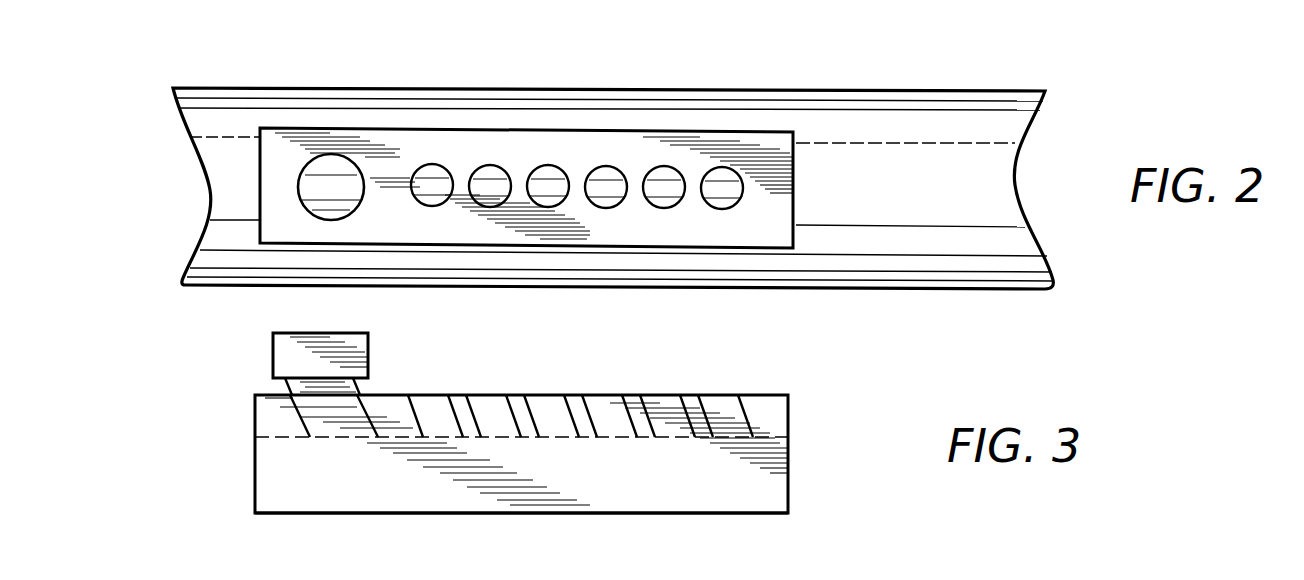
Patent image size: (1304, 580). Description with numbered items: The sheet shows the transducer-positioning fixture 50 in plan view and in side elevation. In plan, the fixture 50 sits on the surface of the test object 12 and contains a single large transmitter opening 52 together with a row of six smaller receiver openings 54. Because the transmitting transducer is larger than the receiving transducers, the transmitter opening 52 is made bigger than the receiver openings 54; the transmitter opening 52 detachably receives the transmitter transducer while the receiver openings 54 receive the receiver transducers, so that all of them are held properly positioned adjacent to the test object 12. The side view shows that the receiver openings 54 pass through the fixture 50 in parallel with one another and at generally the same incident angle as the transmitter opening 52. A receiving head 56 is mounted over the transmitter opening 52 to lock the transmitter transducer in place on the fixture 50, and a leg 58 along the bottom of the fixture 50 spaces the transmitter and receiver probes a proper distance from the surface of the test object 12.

In FIG. 2, the test object 12 is at (898, 90).
In FIG. 2, the fixture 50 is at (795, 193).
In FIG. 3, the fixture 50 is at (788, 457).
In FIG. 2, the transmitter opening 52 is at (327, 168).
In FIG. 3, the transmitter opening 52 is at (323, 428).
In FIG. 2, the receiver openings 54 is at (428, 176).
In FIG. 3, the receiver openings 54 is at (418, 407).
In FIG. 3, the receiving head 56 is at (365, 343).
In FIG. 3, the leg 58 is at (636, 513).